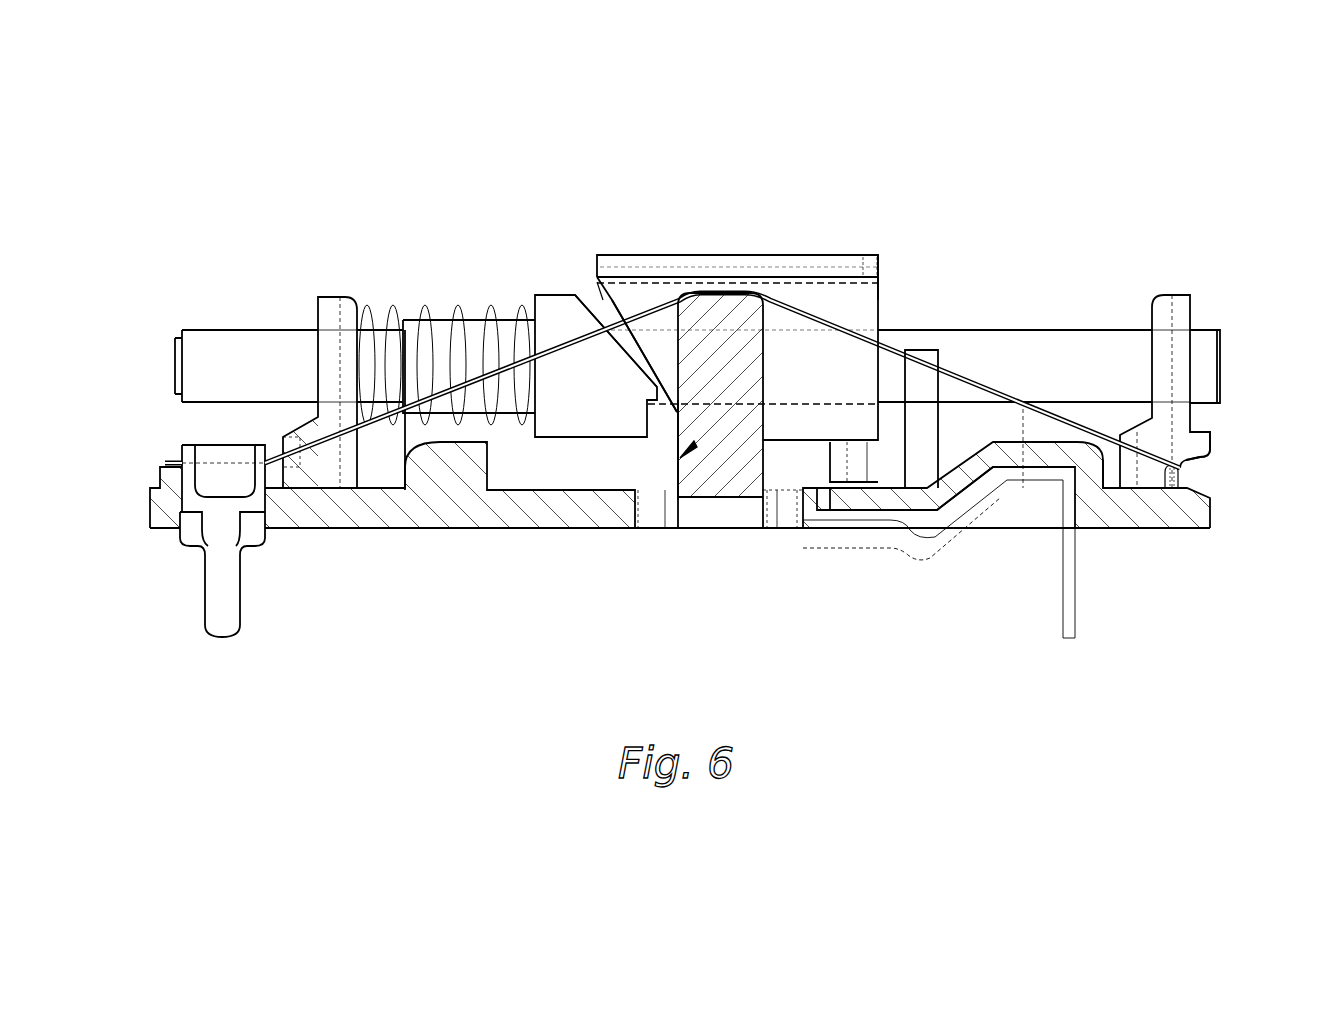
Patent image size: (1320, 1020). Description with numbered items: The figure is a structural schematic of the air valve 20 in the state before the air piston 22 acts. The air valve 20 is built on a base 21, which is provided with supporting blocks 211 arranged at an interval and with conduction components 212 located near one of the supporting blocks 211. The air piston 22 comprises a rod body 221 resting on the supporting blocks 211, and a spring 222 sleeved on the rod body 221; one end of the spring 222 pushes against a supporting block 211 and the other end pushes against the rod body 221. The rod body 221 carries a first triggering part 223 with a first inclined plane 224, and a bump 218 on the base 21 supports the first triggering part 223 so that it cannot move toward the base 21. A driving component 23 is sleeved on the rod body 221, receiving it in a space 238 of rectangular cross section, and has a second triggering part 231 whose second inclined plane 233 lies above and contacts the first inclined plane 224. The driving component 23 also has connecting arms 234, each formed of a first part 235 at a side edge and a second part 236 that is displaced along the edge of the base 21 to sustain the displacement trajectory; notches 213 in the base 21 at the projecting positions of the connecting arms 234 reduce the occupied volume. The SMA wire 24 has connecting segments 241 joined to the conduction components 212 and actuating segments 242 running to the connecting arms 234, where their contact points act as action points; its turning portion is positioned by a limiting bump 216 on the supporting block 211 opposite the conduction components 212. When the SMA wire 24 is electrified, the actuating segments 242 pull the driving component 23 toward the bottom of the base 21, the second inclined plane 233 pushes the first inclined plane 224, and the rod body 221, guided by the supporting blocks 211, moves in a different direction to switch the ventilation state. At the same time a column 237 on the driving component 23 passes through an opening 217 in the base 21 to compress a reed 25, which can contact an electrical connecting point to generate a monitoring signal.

The air valve 20 is at (1243, 112).
The base 21 is at (1180, 513).
The supporting blocks 211 is at (323, 480).
The conduction components 212 is at (223, 580).
The notches 213 is at (650, 510).
The limiting bump 216 is at (1203, 428).
The opening 217 is at (857, 498).
The bump 218 is at (553, 465).
The air piston 22 is at (211, 290).
The rod body 221 is at (253, 347).
The spring 222 is at (382, 323).
The first triggering part 223 is at (543, 310).
The first inclined plane 224 is at (582, 283).
The driving component 23 is at (785, 237).
The second triggering part 231 is at (645, 304).
The second inclined plane 233 is at (610, 300).
The connecting arms 234 is at (672, 470).
The first part 235 is at (720, 305).
The second part 236 is at (727, 480).
The column 237 is at (828, 480).
The space 238 is at (860, 287).
The SMA wire 24 is at (1005, 390).
The connecting segments 241 is at (173, 457).
The actuating segments 242 is at (967, 370).
The reed 25 is at (1075, 583).